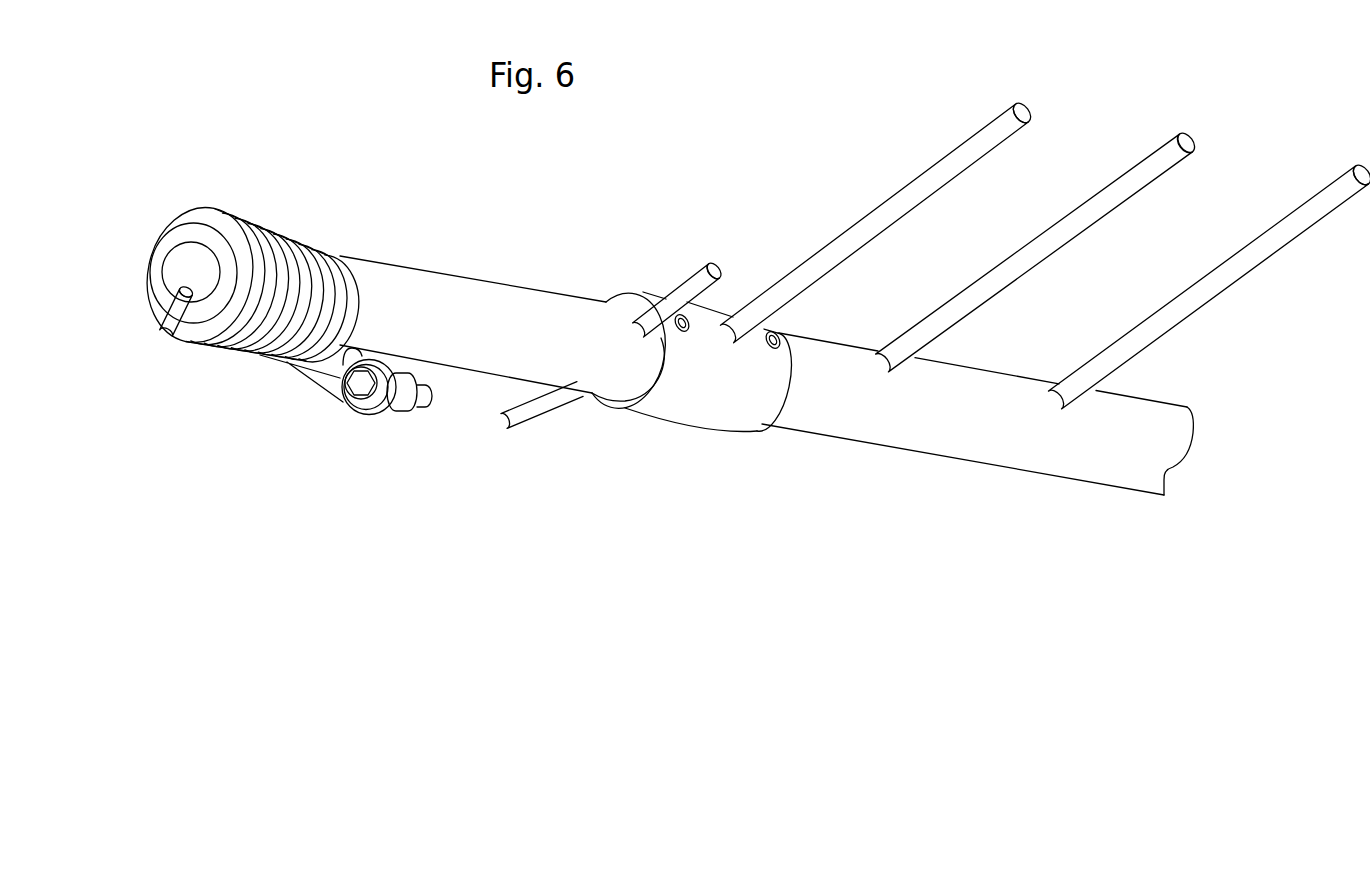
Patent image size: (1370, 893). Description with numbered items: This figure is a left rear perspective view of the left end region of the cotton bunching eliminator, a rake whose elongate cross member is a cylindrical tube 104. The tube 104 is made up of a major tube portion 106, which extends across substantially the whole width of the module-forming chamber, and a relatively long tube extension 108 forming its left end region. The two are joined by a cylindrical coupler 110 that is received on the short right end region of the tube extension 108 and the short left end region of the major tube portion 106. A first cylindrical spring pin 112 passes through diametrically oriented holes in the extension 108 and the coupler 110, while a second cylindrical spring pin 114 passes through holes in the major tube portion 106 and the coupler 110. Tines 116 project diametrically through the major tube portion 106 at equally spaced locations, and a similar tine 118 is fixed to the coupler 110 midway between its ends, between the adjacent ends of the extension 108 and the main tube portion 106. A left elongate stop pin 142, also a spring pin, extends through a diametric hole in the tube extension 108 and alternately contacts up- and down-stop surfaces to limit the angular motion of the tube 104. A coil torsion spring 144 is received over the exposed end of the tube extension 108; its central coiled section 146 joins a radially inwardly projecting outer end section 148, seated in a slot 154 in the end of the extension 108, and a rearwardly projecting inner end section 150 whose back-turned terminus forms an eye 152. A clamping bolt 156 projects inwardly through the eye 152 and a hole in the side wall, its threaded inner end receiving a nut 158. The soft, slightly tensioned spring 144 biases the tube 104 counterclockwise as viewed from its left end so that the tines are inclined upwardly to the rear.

The cylindrical tube 104 is at (856, 452).
The major tube portion 106 is at (1000, 374).
The tube extension 108 is at (491, 283).
The cylindrical coupler 110 is at (697, 406).
The first cylindrical spring pin 112 is at (671, 292).
The second cylindrical spring pin 114 is at (781, 336).
The tines 116 is at (1108, 214).
The tine 118 is at (915, 182).
The left elongate stop pin 142 is at (533, 408).
The coil torsion spring 144 is at (314, 314).
The central coiled section 146 is at (283, 223).
The outer end section 148 is at (165, 318).
The inner end section 150 is at (303, 390).
The eye 152 is at (382, 412).
The slot 154 is at (158, 302).
The clamping bolt 156 is at (443, 408).
The nut 158 is at (420, 413).